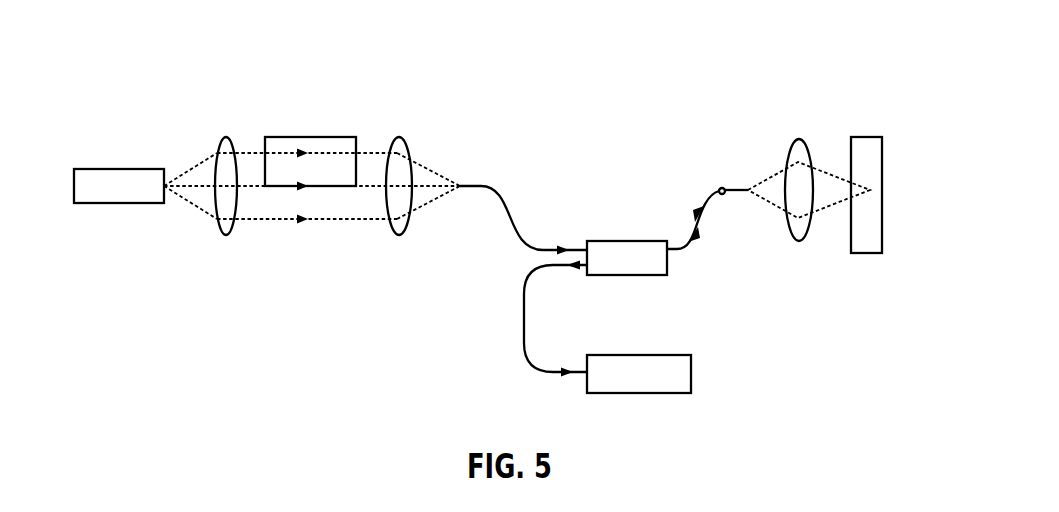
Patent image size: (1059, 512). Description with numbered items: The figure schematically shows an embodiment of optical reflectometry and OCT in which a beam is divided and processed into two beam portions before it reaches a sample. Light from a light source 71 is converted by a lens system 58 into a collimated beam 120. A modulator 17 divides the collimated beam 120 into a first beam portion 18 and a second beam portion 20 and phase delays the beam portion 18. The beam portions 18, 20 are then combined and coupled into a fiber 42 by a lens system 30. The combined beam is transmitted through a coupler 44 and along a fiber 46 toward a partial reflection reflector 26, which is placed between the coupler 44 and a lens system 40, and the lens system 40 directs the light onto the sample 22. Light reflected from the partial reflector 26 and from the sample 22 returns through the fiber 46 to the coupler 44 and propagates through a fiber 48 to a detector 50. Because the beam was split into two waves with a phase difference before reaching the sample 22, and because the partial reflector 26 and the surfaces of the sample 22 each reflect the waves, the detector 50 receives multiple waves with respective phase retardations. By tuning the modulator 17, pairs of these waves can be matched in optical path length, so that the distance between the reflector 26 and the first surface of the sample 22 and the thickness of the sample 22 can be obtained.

The light source 71 is at (115, 157).
The lens system 58 is at (226, 127).
The modulator 17 is at (303, 127).
The beam portion 18 is at (375, 178).
The lens system 30 is at (413, 142).
The fiber 42 is at (478, 177).
The coupler 44 is at (619, 237).
The fiber 46 is at (677, 243).
The partial reflection reflector 26 is at (722, 203).
The lens system 40 is at (782, 155).
The sample 22 is at (845, 153).
The fiber 48 is at (515, 320).
The detector 50 is at (695, 376).
The collimated beam 120 is at (251, 190).
The beam portion 20 is at (368, 200).